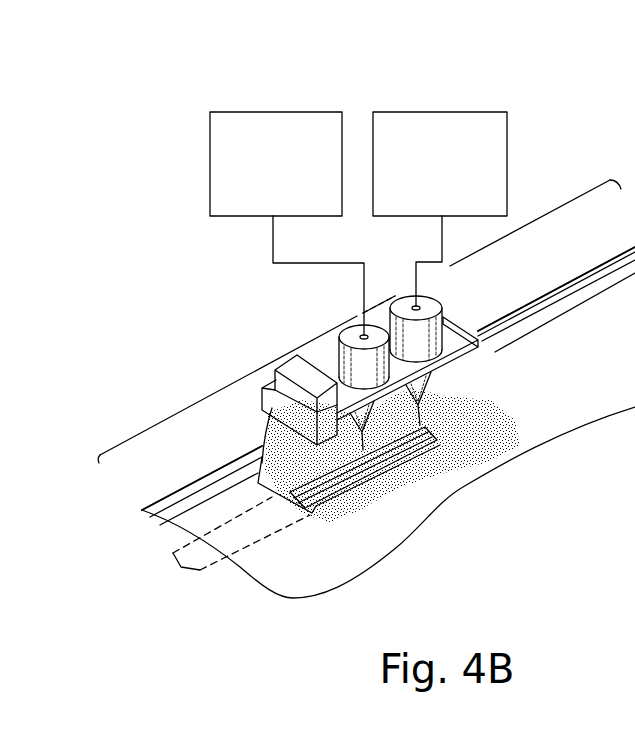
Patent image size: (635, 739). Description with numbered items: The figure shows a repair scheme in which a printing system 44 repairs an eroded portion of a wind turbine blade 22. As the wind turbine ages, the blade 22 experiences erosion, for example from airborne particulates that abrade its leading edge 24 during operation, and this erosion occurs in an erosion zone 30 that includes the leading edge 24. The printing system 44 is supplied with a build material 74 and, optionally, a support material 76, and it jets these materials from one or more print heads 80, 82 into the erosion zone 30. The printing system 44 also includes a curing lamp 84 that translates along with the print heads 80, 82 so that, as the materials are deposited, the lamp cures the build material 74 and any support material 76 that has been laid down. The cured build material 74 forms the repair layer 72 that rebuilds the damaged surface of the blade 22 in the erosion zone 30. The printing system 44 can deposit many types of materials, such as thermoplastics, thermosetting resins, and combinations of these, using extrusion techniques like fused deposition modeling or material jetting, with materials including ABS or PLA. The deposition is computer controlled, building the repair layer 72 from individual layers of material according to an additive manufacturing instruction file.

The wind turbine blade 22 is at (193, 483).
The leading edge 24 is at (620, 357).
The erosion zone 30 is at (212, 393).
The printing system 44 is at (458, 322).
The repair layer 72 is at (292, 517).
The build material 74 is at (430, 112).
The support material 76 is at (292, 112).
The print head 80 is at (430, 382).
The print head 82 is at (425, 425).
The curing lamp 84 is at (365, 440).